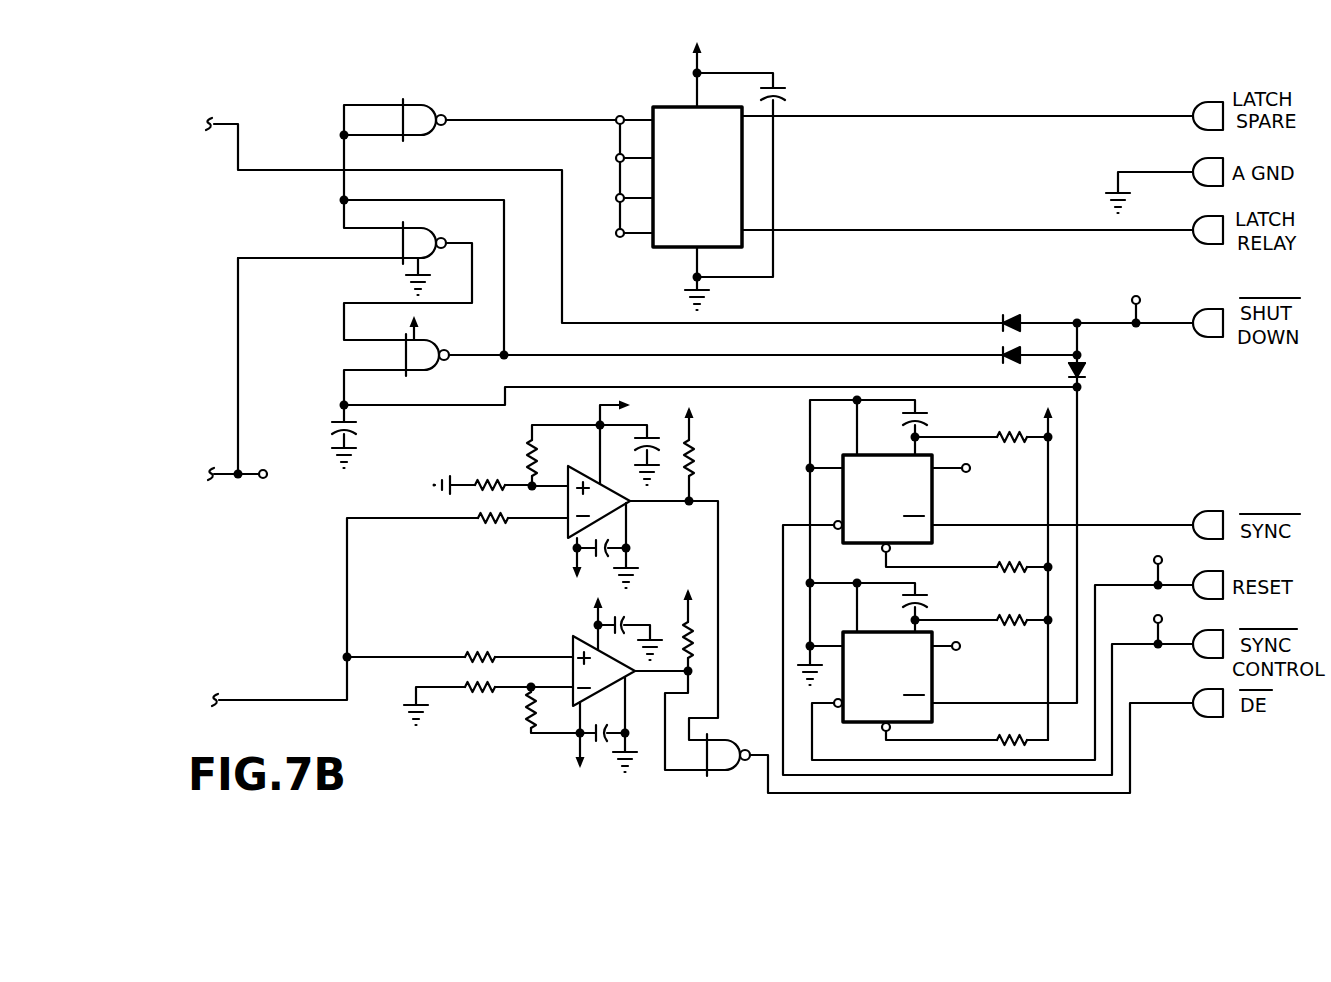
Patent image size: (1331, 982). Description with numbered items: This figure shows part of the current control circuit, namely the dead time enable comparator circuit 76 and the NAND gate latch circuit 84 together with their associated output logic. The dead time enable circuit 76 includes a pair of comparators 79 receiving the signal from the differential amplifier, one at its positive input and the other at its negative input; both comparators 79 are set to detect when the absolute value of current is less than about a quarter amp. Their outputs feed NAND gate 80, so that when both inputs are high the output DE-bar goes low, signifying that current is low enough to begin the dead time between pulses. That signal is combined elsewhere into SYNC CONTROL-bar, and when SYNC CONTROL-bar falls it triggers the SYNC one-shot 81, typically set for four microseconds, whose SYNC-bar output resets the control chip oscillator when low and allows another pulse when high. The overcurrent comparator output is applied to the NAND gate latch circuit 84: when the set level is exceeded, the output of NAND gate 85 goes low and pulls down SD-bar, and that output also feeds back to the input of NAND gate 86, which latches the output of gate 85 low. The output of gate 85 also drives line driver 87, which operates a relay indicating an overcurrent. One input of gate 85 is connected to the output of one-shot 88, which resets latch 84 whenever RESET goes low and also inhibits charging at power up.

The dead time enable comparator circuit 76 is at (293, 634).
The comparator 79 is at (568, 528).
The NAND gate 80 is at (714, 740).
The SYNC one-shot 81 is at (932, 507).
The NAND gate latch circuit 84 is at (303, 357).
The NAND gate 85 is at (432, 340).
The NAND gate 86 is at (432, 228).
The line driver 87 is at (672, 107).
The one-shot 88 is at (932, 690).